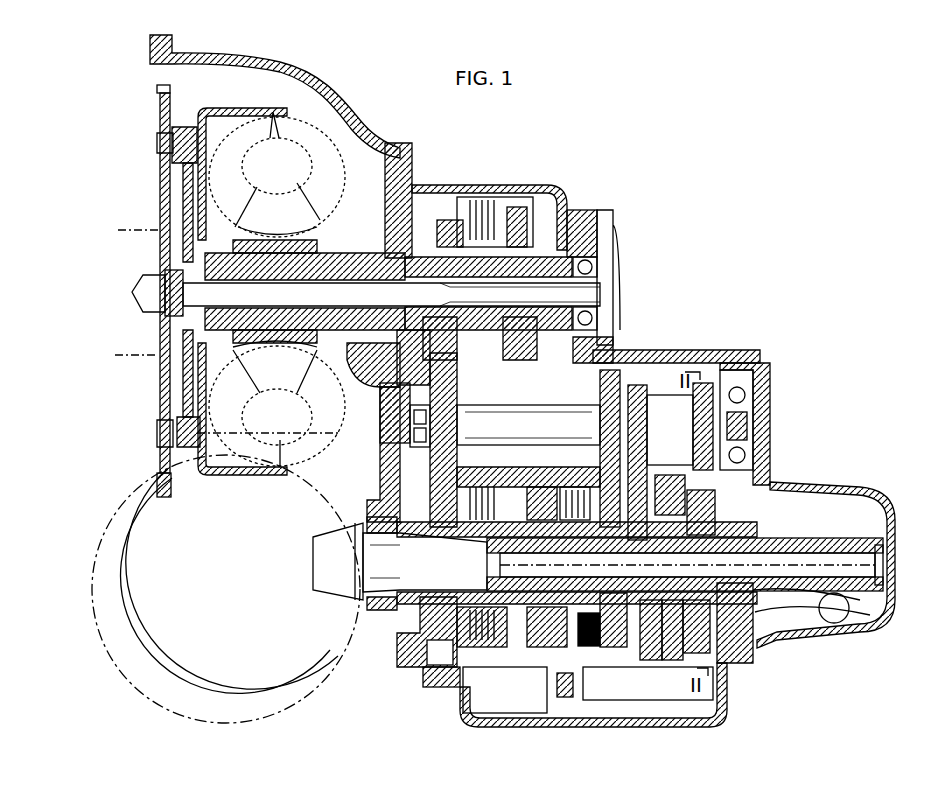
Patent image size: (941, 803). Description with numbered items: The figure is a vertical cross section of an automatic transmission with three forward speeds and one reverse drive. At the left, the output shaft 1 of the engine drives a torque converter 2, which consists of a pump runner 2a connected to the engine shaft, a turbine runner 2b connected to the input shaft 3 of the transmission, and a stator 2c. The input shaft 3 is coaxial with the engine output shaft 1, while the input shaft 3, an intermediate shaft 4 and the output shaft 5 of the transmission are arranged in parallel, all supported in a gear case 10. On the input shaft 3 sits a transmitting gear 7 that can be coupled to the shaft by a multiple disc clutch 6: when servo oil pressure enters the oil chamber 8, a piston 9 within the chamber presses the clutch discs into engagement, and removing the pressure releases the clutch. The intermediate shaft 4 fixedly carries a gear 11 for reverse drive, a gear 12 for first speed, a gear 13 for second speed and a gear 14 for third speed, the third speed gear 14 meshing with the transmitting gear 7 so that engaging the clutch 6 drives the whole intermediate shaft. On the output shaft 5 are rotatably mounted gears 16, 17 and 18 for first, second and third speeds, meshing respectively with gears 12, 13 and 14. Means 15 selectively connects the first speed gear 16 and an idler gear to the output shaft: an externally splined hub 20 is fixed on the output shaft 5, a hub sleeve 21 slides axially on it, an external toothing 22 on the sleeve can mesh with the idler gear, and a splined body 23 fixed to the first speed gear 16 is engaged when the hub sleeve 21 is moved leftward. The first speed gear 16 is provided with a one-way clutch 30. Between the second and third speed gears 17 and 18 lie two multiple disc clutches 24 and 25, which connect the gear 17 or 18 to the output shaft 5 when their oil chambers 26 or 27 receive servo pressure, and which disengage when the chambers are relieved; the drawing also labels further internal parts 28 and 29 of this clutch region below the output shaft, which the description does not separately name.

The output shaft of an engine 1 is at (120, 352).
The torque converter 2 is at (271, 162).
The pump runner 2a is at (333, 193).
The turbine runner 2b is at (247, 193).
The stator 2c is at (290, 221).
The input shaft of the transmission 3 is at (593, 293).
The intermediate shaft 4 is at (558, 408).
The output shaft of the transmission 5 is at (377, 575).
The multiple disc clutch 6 is at (485, 200).
The transmitting gear 7 is at (438, 220).
The oil chamber 8 is at (523, 240).
The piston 9 is at (518, 213).
The gear case 10 is at (363, 140).
The gear for reverse drive 11 is at (710, 372).
The gear for first speed 12 is at (650, 397).
The gear for second speed 13 is at (600, 385).
The gear for third speed 14 is at (455, 385).
The means for selectively connecting 15 is at (678, 660).
The gear for first speed 16 is at (637, 650).
The gear for second speed 17 is at (615, 640).
The gear for third speed 18 is at (433, 625).
The externally splined hub 20 is at (717, 663).
The hub sleeve 21 is at (715, 468).
The external toothing 22 is at (680, 426).
The splined body 23 is at (672, 470).
The multiple disc clutch 24 is at (580, 630).
The multiple disc clutch 25 is at (440, 652).
The oil chamber 26 is at (540, 647).
The oil chamber 27 is at (533, 632).
The clutch disc pack 28 is at (547, 645).
The clutch springs 29 is at (513, 633).
The one-way clutch 30 is at (663, 655).